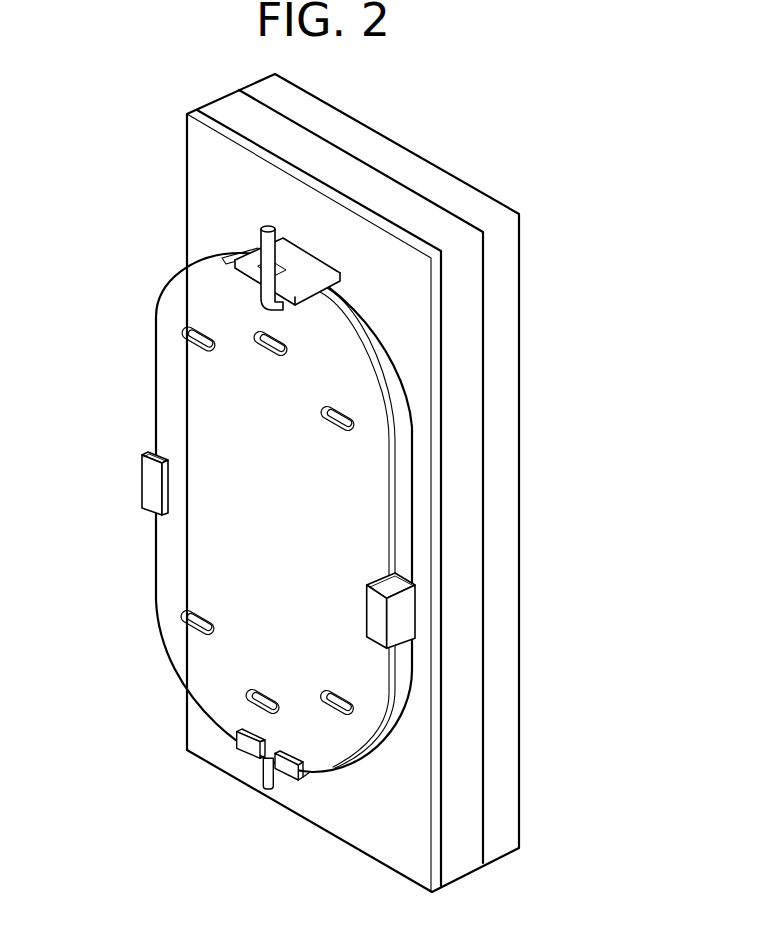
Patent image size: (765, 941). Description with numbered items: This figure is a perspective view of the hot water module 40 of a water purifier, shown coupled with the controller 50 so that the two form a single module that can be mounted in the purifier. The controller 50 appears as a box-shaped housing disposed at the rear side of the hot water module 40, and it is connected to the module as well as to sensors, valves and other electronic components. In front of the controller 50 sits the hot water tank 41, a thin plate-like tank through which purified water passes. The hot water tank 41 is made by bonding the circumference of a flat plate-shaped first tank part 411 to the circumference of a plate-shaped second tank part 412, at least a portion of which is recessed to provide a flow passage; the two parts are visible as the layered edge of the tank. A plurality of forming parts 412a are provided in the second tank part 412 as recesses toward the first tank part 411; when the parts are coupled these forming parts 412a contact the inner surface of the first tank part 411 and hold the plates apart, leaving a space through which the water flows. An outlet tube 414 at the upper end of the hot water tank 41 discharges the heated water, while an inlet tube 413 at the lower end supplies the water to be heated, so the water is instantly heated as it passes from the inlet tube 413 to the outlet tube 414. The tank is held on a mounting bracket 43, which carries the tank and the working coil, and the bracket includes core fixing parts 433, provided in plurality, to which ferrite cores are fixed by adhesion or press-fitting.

The controller 50 is at (535, 263).
The hot water module 40 is at (347, 528).
The hot water tank 41 is at (331, 519).
The first tank part 411 is at (395, 683).
The second tank part 412 is at (389, 693).
The forming parts 412a is at (336, 421).
The mounting bracket 43 is at (418, 657).
The core fixing part 433 is at (298, 281).
The outlet tube 414 is at (261, 238).
The inlet tube 413 is at (267, 770).